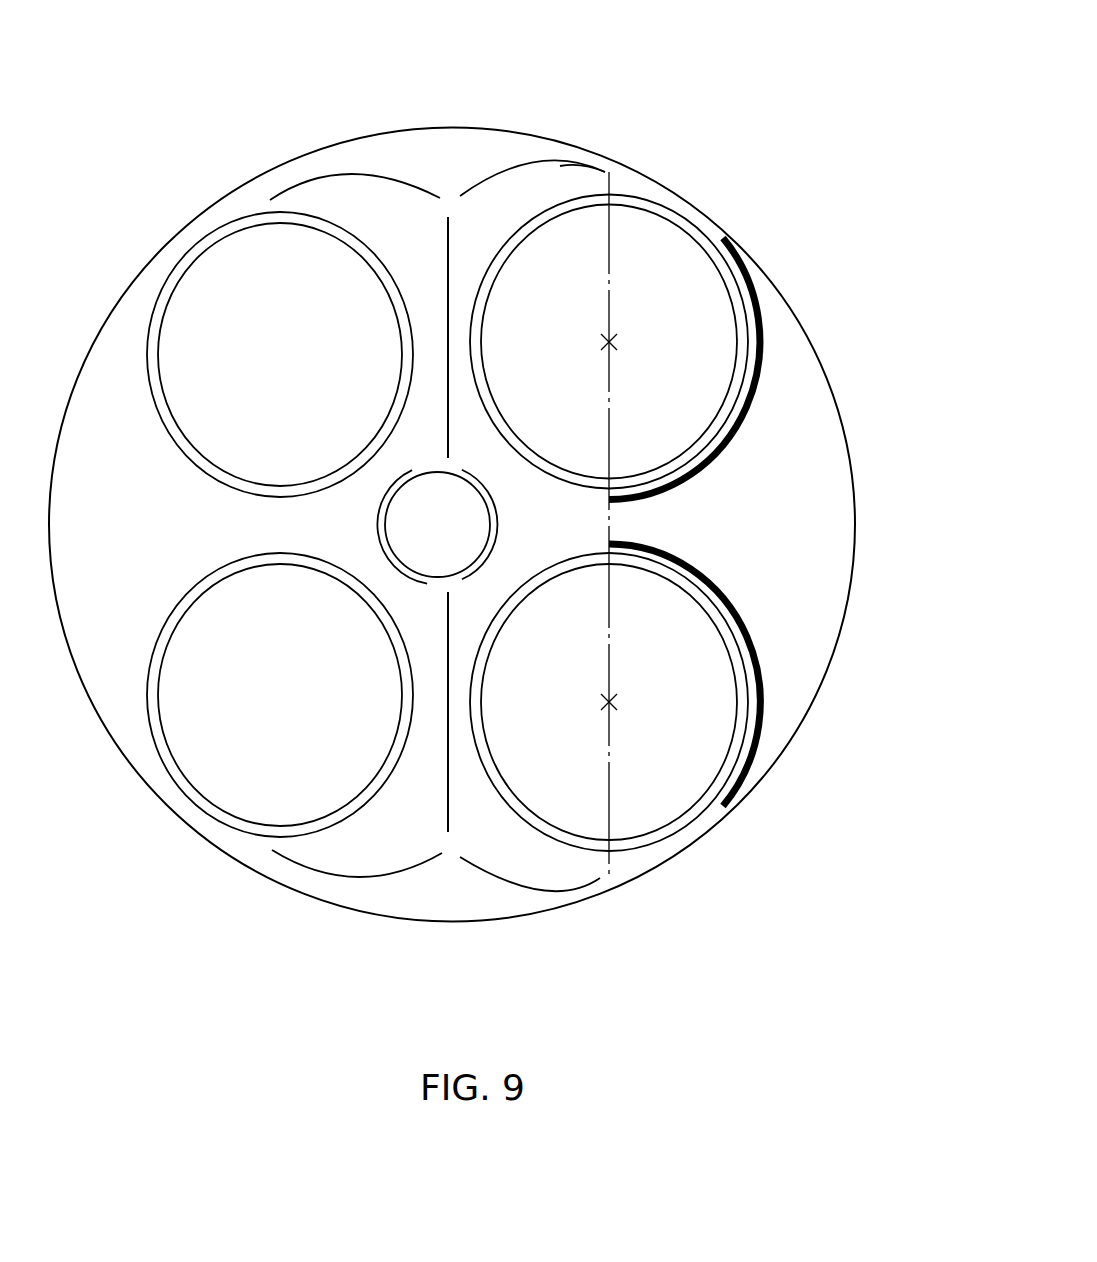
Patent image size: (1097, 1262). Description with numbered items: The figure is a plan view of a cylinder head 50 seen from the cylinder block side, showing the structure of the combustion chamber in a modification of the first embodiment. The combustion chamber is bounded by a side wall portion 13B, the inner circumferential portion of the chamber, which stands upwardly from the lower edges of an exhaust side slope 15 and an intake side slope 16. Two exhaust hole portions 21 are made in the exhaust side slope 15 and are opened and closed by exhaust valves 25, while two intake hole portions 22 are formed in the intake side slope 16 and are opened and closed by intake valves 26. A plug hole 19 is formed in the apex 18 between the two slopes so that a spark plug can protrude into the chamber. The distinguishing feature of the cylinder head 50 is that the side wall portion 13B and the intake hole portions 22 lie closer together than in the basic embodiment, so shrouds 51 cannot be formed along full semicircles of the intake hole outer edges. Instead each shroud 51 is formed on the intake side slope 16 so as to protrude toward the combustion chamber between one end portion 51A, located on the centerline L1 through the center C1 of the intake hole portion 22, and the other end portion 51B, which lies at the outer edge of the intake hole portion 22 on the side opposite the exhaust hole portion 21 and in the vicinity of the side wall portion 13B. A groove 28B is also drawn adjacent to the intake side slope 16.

The side wall portion 13B is at (855, 540).
The exhaust side slope 15 is at (382, 192).
The intake side slope 16 is at (498, 192).
The apex 18 is at (446, 815).
The plug hole 19 is at (424, 578).
The exhaust hole portion 21 is at (149, 394).
The intake hole portion 22 is at (513, 236).
The exhaust valve 25 is at (204, 436).
The intake valve 26 is at (697, 426).
The groove 28B is at (608, 177).
The cylinder head 50 is at (716, 76).
The shroud 51 is at (755, 424).
The one end portion 51A is at (609, 501).
The other end portion 51B is at (727, 240).
The center of cylinder bore C1 is at (609, 342).
The center line L1 is at (612, 518).